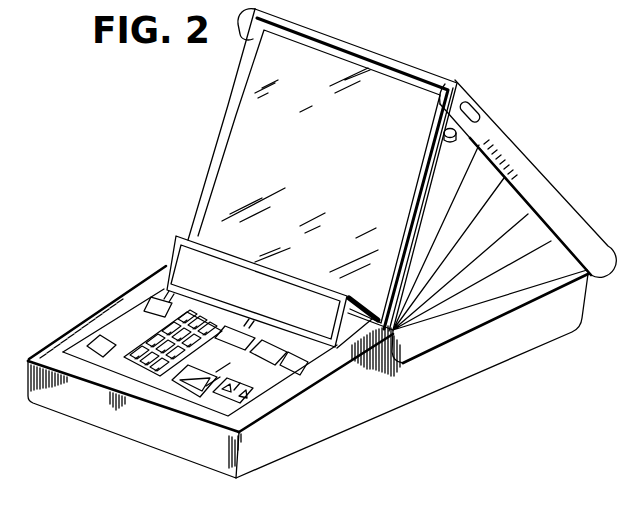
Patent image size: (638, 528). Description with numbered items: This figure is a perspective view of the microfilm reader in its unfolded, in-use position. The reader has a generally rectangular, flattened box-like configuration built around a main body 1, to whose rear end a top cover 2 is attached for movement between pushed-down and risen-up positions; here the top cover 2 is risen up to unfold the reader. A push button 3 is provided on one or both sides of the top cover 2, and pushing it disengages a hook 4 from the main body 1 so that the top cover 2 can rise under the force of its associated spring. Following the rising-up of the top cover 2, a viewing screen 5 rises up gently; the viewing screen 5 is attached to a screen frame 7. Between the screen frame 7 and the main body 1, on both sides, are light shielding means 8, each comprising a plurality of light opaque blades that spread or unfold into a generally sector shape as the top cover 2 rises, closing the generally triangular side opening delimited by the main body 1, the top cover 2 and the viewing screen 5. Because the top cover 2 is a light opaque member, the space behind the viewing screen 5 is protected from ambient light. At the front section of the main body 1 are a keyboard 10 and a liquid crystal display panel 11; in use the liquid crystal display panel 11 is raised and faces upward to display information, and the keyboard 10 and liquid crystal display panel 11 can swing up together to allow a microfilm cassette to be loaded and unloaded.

The main body 1 is at (364, 410).
The top cover 2 is at (508, 142).
The push button 3 is at (470, 111).
The hook 4 is at (444, 133).
The viewing screen 5 is at (383, 88).
The screen frame 7 is at (407, 228).
The light shielding means 8 is at (508, 286).
The keyboard 10 is at (117, 326).
The liquid crystal display panel 11 is at (178, 262).